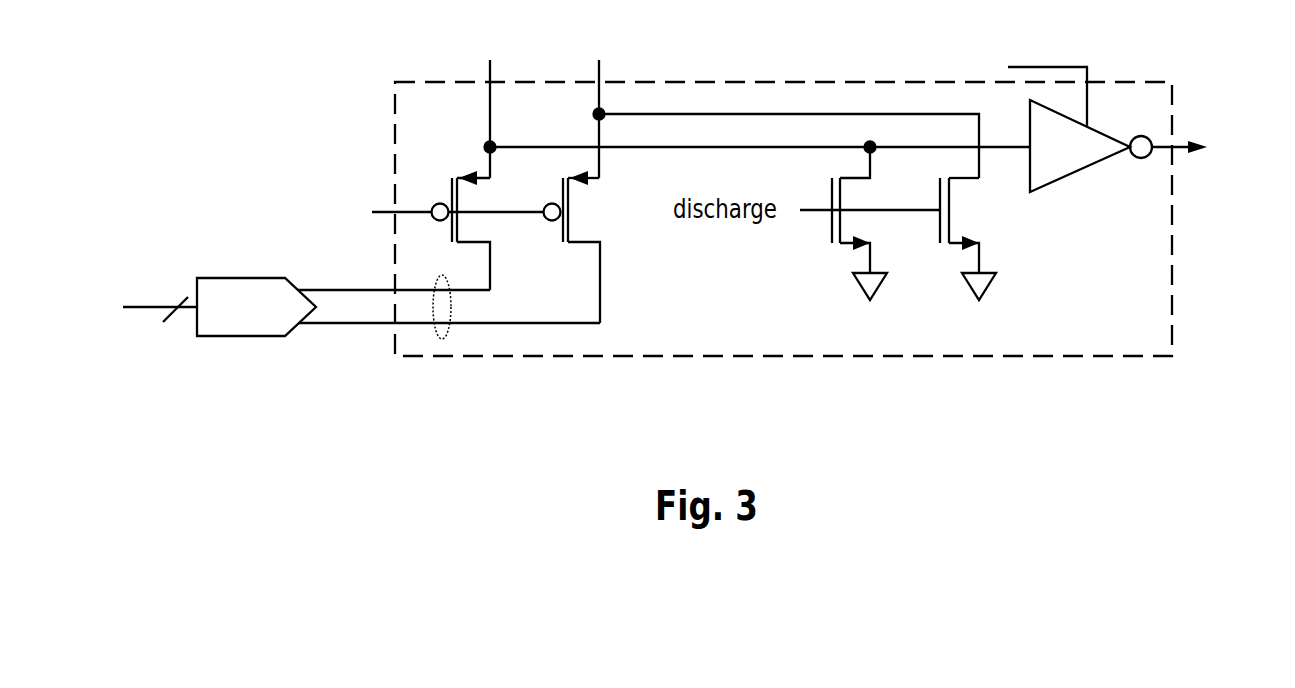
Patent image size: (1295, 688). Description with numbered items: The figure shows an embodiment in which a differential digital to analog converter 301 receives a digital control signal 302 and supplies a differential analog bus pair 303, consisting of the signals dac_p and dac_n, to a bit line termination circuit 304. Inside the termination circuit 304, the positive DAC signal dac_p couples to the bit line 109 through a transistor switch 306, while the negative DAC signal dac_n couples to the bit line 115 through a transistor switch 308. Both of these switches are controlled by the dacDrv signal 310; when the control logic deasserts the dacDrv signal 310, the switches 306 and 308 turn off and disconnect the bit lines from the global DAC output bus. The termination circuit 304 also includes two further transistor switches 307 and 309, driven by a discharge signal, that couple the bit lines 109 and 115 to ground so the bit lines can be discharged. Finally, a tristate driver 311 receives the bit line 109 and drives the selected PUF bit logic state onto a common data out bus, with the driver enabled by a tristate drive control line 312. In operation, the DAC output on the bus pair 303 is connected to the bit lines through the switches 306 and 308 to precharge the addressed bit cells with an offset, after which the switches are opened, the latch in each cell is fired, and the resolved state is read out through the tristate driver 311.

The bit line 109 is at (489, 105).
The bit line 115 is at (598, 105).
The differential digital to analog converter 301 is at (228, 277).
The digital control signal 302 is at (143, 305).
The differential analog bus pair 303 is at (451, 308).
The bit line termination circuit 304 is at (783, 219).
The transistor switch 306 is at (452, 185).
The transistor switch 307 is at (830, 233).
The transistor switch 308 is at (561, 185).
The transistor switch 309 is at (938, 227).
The dacDrv signal 310 is at (387, 207).
The tristate driver 311 is at (1073, 177).
The triStateDrv control line 312 is at (1027, 62).